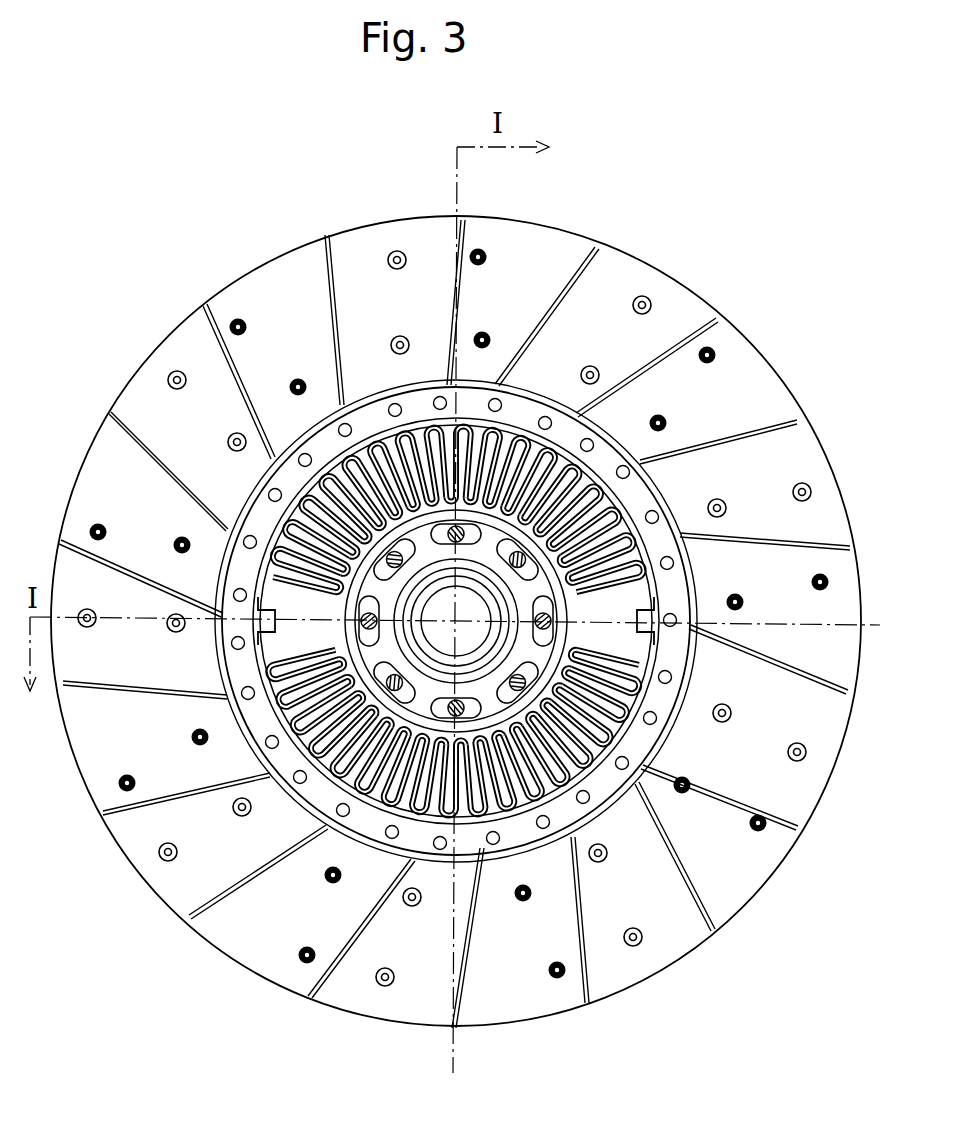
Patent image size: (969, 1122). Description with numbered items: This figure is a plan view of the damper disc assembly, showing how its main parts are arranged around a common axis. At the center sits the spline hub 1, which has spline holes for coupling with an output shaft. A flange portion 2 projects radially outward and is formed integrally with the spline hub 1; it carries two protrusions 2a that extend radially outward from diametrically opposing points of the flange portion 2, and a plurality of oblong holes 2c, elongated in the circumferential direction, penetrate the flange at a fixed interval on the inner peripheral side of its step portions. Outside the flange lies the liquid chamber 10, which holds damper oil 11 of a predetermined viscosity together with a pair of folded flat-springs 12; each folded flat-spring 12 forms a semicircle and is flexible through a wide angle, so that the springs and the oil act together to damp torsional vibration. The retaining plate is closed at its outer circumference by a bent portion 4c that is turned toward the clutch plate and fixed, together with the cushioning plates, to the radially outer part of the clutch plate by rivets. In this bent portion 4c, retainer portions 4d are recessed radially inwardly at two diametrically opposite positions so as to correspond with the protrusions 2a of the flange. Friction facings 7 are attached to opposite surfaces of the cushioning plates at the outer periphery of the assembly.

The spline hub 1 is at (527, 540).
The flange portion 2 is at (610, 465).
The protrusions 2a is at (285, 502).
The oblong holes 2c is at (405, 542).
The bent portion 4c is at (338, 828).
The retainer portions 4d is at (235, 560).
The friction facings 7 is at (268, 258).
The liquid chamber 10 is at (530, 436).
The damper oil 11 is at (648, 770).
The folded flat-springs 12 is at (500, 425).